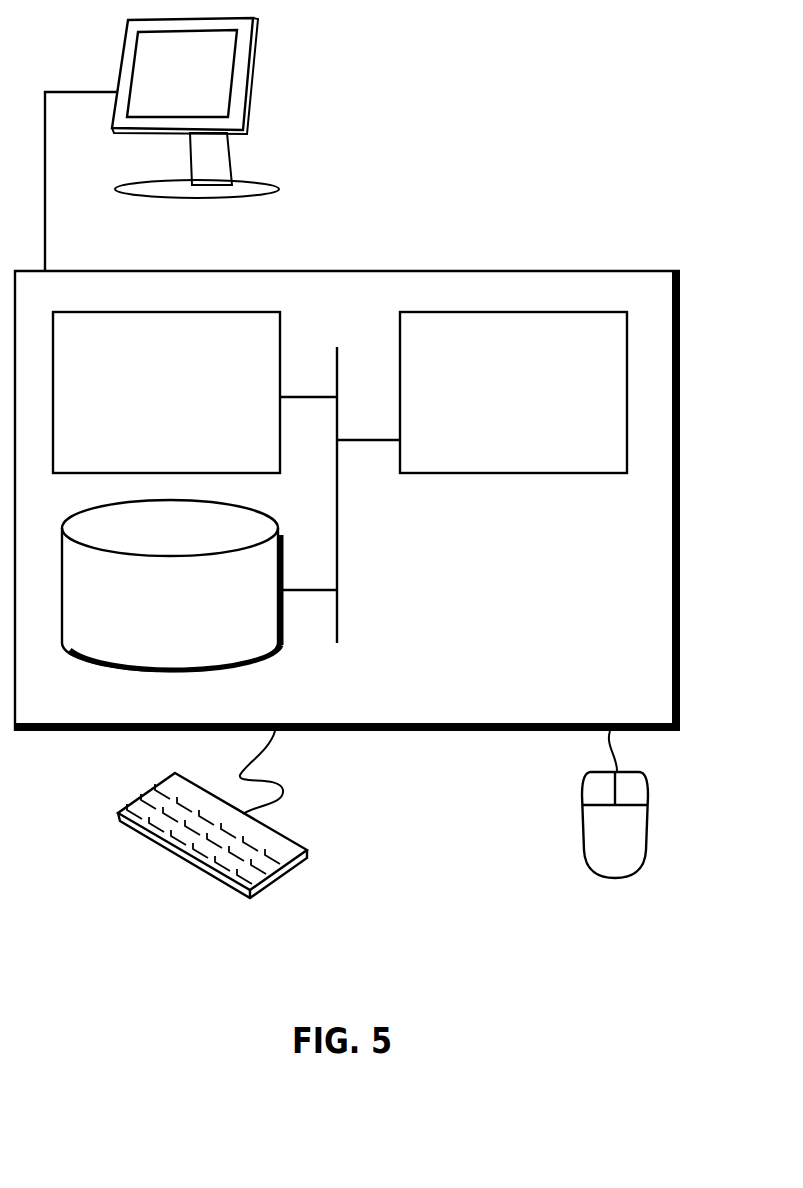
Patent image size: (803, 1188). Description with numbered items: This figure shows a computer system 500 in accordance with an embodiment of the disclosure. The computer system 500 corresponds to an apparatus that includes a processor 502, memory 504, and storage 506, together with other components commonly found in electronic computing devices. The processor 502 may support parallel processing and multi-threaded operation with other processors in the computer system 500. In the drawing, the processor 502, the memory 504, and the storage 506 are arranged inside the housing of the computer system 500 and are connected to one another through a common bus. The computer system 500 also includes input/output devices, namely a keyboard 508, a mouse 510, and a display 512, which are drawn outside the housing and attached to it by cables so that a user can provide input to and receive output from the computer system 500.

The computer system 500 is at (388, 248).
The processor 502 is at (540, 405).
The memory 504 is at (189, 404).
The storage 506 is at (153, 617).
The keyboard 508 is at (137, 838).
The mouse 510 is at (594, 847).
The display 512 is at (195, 123).